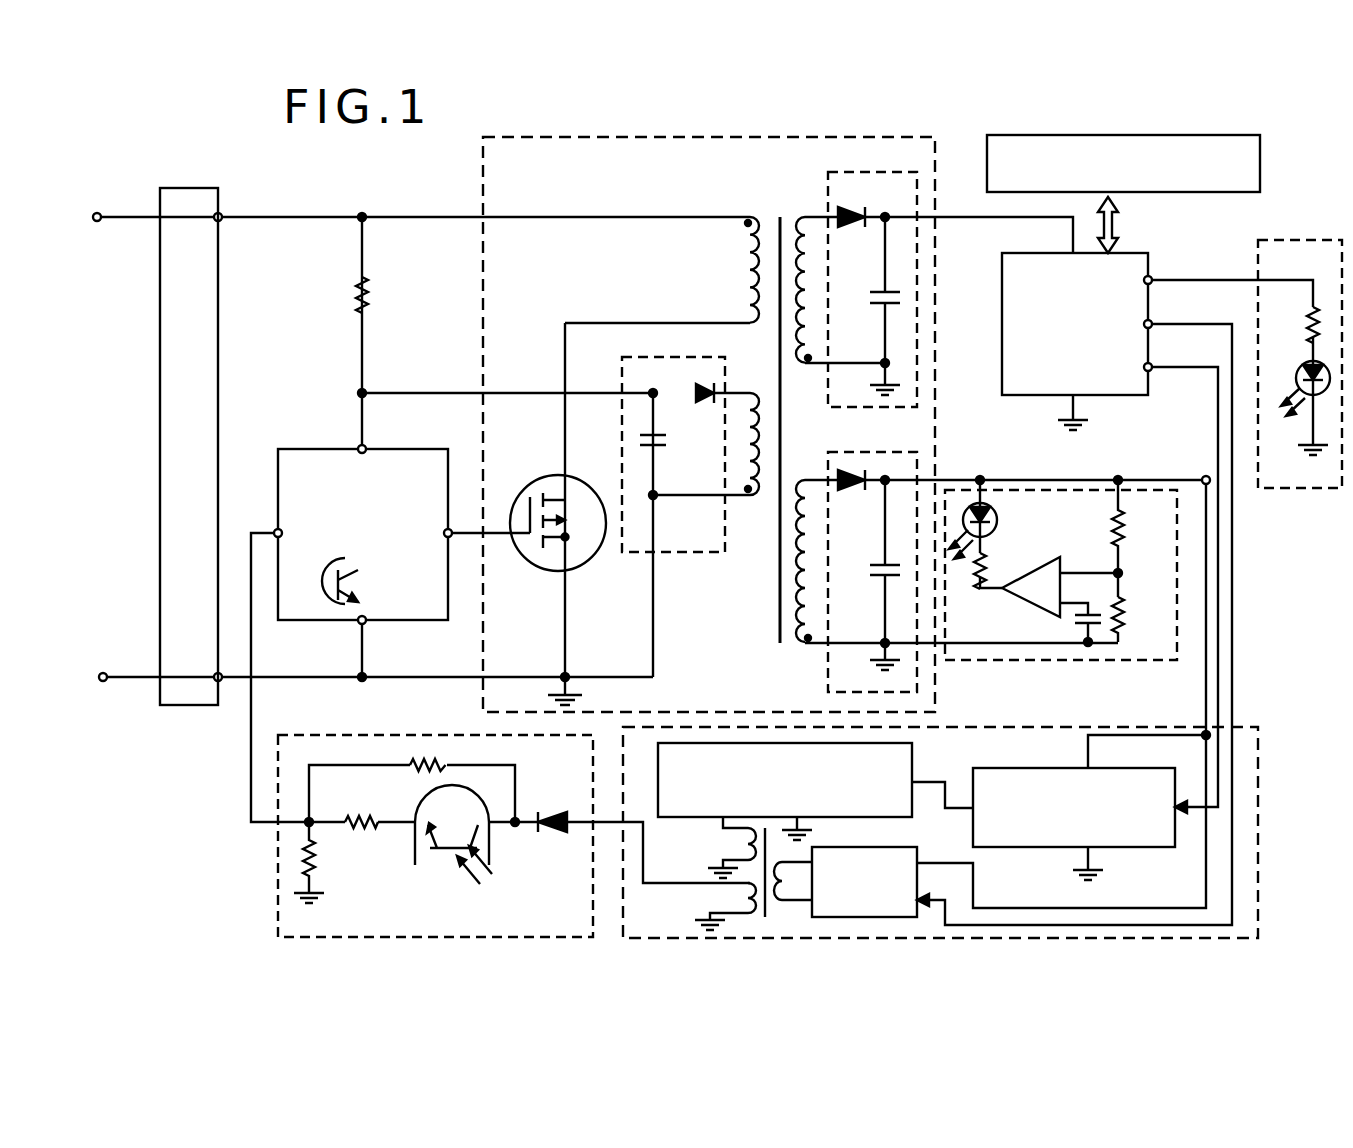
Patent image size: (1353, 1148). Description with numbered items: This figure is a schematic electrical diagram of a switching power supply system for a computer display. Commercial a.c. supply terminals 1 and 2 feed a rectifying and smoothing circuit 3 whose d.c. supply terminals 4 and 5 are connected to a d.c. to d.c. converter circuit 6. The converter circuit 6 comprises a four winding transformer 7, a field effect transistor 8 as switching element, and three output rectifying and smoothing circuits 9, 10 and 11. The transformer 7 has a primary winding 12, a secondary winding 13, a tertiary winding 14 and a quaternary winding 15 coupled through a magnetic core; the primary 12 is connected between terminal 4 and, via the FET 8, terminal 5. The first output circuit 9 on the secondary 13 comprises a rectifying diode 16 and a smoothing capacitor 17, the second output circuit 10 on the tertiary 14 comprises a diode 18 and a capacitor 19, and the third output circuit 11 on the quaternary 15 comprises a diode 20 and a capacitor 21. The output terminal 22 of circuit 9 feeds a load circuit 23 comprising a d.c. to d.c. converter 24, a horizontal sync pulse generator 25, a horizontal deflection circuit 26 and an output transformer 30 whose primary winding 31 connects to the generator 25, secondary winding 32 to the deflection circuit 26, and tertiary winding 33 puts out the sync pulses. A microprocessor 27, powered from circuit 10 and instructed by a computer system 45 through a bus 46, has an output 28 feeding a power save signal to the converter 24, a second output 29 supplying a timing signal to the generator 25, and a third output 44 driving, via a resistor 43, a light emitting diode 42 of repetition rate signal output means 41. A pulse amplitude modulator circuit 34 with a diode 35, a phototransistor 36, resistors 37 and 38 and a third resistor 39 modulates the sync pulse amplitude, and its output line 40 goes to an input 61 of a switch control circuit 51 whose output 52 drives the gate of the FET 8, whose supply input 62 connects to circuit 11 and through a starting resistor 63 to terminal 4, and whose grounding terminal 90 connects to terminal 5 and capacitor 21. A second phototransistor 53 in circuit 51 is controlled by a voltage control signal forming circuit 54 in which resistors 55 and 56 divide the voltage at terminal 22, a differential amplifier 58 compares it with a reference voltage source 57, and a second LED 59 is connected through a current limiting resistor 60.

The a.c. supply terminal 1 is at (97, 213).
The a.c. supply terminal 2 is at (105, 683).
The rectifying and smoothing circuit 3 is at (195, 188).
The d.c. supply terminal 4 is at (222, 214).
The d.c. supply terminal 5 is at (221, 682).
The d.c. to d.c. converter circuit 6 is at (480, 175).
The four winding transformer 7 is at (766, 200).
The field effect transistor 8 is at (540, 478).
The first output rectifying and smoothing circuit 9 is at (880, 452).
The second output rectifying and smoothing circuit 10 is at (826, 180).
The third output rectifying and smoothing circuit 11 is at (688, 552).
The primary winding 12 is at (745, 282).
The secondary winding 13 is at (814, 602).
The tertiary winding 14 is at (814, 288).
The quaternary winding 15 is at (745, 438).
The rectifying diode 16 is at (853, 492).
The smoothing capacitor 17 is at (883, 566).
The rectifying diode 18 is at (852, 230).
The smoothing capacitor 19 is at (887, 306).
The rectifying diode 20 is at (714, 388).
The smoothing capacitor 21 is at (662, 447).
The output terminal 22 is at (1205, 476).
The load circuit 23 is at (1260, 815).
The d.c. to d.c. converter 24 is at (1020, 768).
The horizontal sync pulse generator 25 is at (905, 847).
The horizontal deflection circuit 26 is at (914, 752).
The microprocessor 27 is at (1130, 253).
The microprocessor output 28 is at (1153, 365).
The second output 29 is at (1153, 321).
The output transformer 30 is at (768, 898).
The primary winding 31 is at (780, 860).
The secondary winding 32 is at (740, 842).
The tertiary winding 33 is at (740, 898).
The pulse amplitude modulator circuit 34 is at (275, 862).
The diode 35 is at (565, 832).
The phototransistor 36 is at (415, 850).
The resistor 37 is at (362, 816).
The resistor 38 is at (318, 853).
The third resistor 39 is at (432, 775).
The output line 40 is at (251, 785).
The horizontal sync pulse repetition rate signal output means 41 is at (1290, 238).
The light emitting diode 42 is at (1305, 420).
The resistor 43 is at (1308, 318).
The third output 44 is at (1153, 277).
The computer system 45 is at (1262, 163).
The bus 46 is at (1120, 215).
The switch control circuit 51 is at (388, 449).
The output 52 is at (452, 537).
The second phototransistor 53 is at (335, 562).
The voltage control signal forming circuit 54 is at (1105, 660).
The resistor 55 is at (1122, 522).
The resistor 56 is at (1122, 602).
The reference voltage source 57 is at (1070, 628).
The differential amplifier 58 is at (1050, 560).
The second LED 59 is at (995, 522).
The current limiting resistor 60 is at (992, 568).
The input 61 is at (275, 530).
The supply input 62 is at (358, 447).
The starting resistor 63 is at (370, 300).
The grounding terminal 90 is at (358, 625).